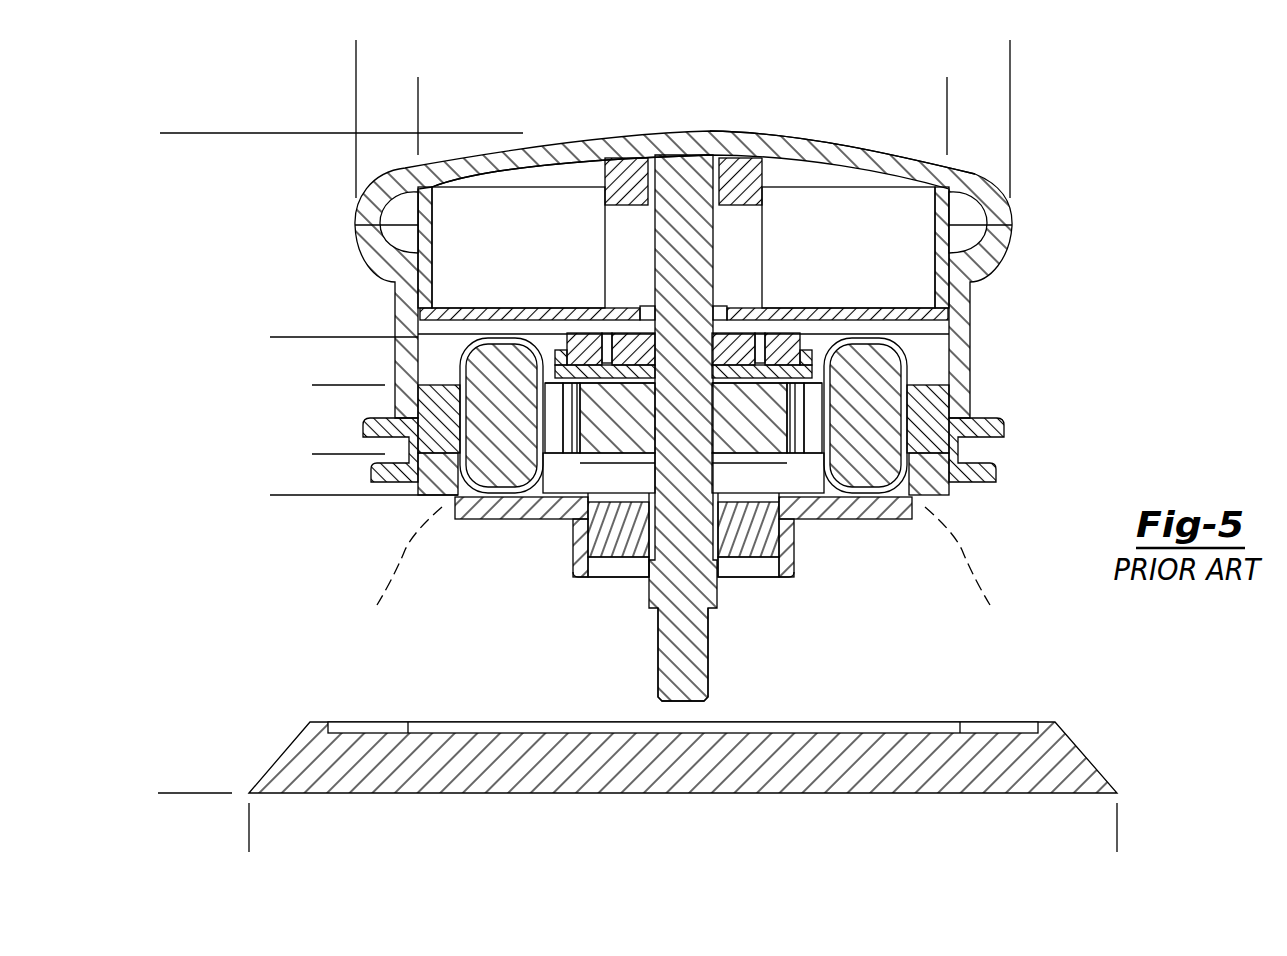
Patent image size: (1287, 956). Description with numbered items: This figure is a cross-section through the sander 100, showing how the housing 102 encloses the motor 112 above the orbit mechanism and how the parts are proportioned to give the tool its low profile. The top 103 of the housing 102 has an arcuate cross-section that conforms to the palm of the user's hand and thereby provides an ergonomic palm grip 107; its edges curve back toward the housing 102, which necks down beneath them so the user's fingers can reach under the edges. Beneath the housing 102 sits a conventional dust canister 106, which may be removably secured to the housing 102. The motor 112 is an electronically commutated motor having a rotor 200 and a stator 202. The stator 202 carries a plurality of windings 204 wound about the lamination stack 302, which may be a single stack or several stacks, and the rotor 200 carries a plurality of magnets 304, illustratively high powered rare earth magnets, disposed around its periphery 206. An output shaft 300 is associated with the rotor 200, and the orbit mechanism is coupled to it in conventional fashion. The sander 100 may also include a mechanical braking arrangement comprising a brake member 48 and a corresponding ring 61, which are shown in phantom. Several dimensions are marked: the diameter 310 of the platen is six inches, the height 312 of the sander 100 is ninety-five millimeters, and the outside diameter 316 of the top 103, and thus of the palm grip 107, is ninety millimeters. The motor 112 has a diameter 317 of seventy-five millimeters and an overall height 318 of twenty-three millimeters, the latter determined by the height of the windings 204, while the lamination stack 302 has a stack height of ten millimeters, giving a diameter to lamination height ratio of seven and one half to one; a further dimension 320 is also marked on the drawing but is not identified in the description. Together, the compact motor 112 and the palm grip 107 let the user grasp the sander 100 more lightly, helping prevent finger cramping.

The brake member 48 is at (681, 566).
The ring 61 is at (1005, 720).
The sander 100 is at (764, 399).
The housing 102 is at (1013, 200).
The top 103 is at (706, 136).
The dust canister 106 is at (696, 721).
The palm grip 107 is at (832, 138).
The motor 112 is at (922, 332).
The rotor 200 is at (670, 430).
The stator 202 is at (916, 410).
The windings 204 is at (478, 470).
The periphery 206 is at (570, 420).
The output shaft 300 is at (709, 660).
The lamination stack 302 is at (437, 388).
The magnets 304 is at (577, 455).
The diameter of platen 310 is at (263, 827).
The height of sander 312 is at (183, 147).
The outside diameter of top 316 is at (370, 55).
The diameter of motor 317 is at (432, 93).
The overall height of motor 318 is at (285, 351).
The tab spacing dimension 320 is at (334, 399).